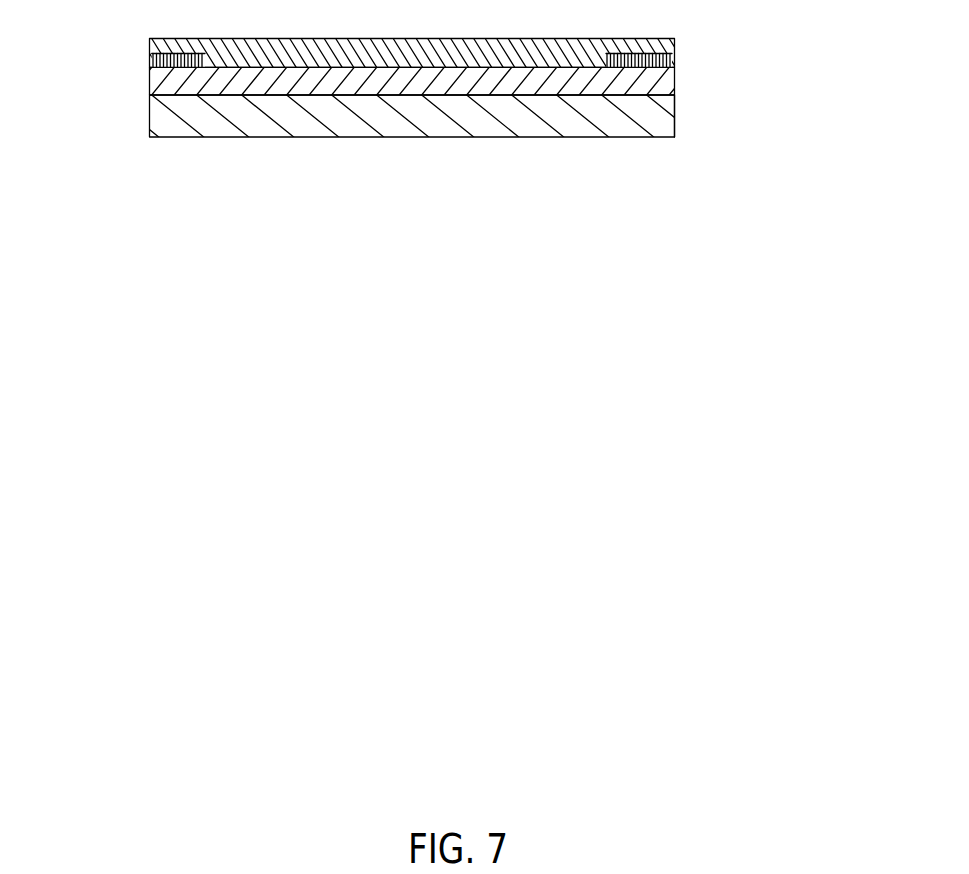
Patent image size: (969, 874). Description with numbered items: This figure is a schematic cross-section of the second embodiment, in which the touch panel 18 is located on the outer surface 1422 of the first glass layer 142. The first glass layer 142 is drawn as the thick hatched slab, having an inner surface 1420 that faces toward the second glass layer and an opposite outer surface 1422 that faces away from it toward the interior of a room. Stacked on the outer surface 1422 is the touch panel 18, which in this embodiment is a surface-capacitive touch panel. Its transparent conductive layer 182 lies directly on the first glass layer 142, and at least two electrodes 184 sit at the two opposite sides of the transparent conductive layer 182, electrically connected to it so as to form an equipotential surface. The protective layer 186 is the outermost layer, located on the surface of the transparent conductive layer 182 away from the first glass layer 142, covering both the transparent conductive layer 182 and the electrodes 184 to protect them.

The touch panel 18 is at (463, 56).
The transparent conductive layer 182 is at (674, 78).
The electrodes 184 is at (421, 42).
The protective layer 186 is at (162, 55).
The first glass layer 142 is at (423, 140).
The inner surface 1420 is at (450, 138).
The outer surface 1422 is at (648, 96).